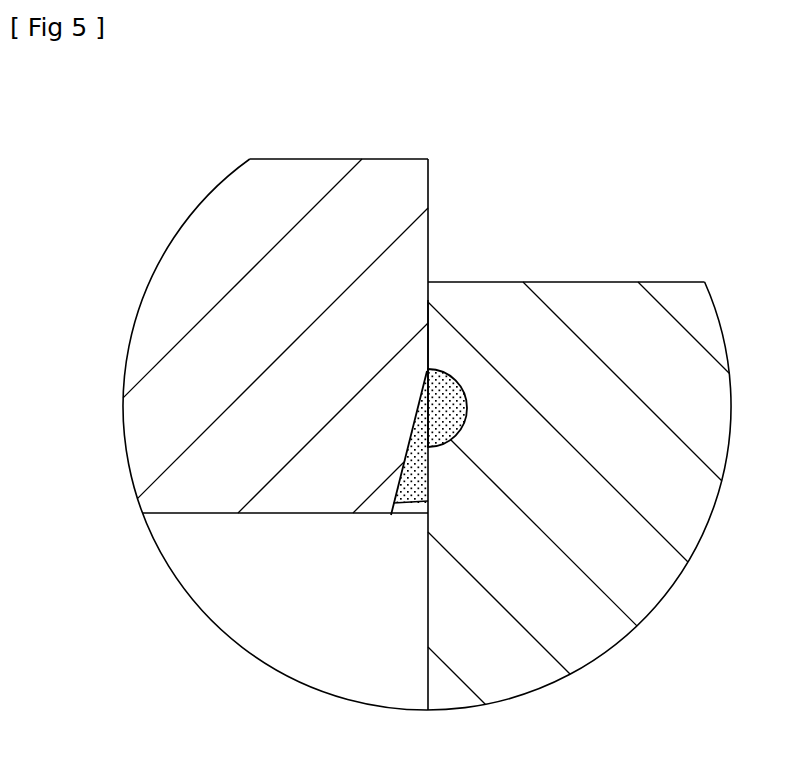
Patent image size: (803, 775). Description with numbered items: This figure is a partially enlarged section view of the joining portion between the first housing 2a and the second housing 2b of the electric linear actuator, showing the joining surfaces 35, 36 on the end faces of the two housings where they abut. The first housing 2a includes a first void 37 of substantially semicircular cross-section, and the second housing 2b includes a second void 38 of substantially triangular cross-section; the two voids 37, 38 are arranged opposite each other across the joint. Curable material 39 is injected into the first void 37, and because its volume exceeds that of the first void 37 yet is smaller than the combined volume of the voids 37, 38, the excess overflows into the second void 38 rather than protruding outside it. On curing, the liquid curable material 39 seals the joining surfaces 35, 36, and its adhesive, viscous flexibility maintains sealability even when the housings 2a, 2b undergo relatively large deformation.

The first housing 2a is at (613, 298).
The second housing 2b is at (302, 173).
The joining surface 35 is at (427, 328).
The joining surface 36 is at (428, 357).
The first void 37 is at (460, 412).
The second void 38 is at (398, 484).
The curable material 39 is at (440, 422).